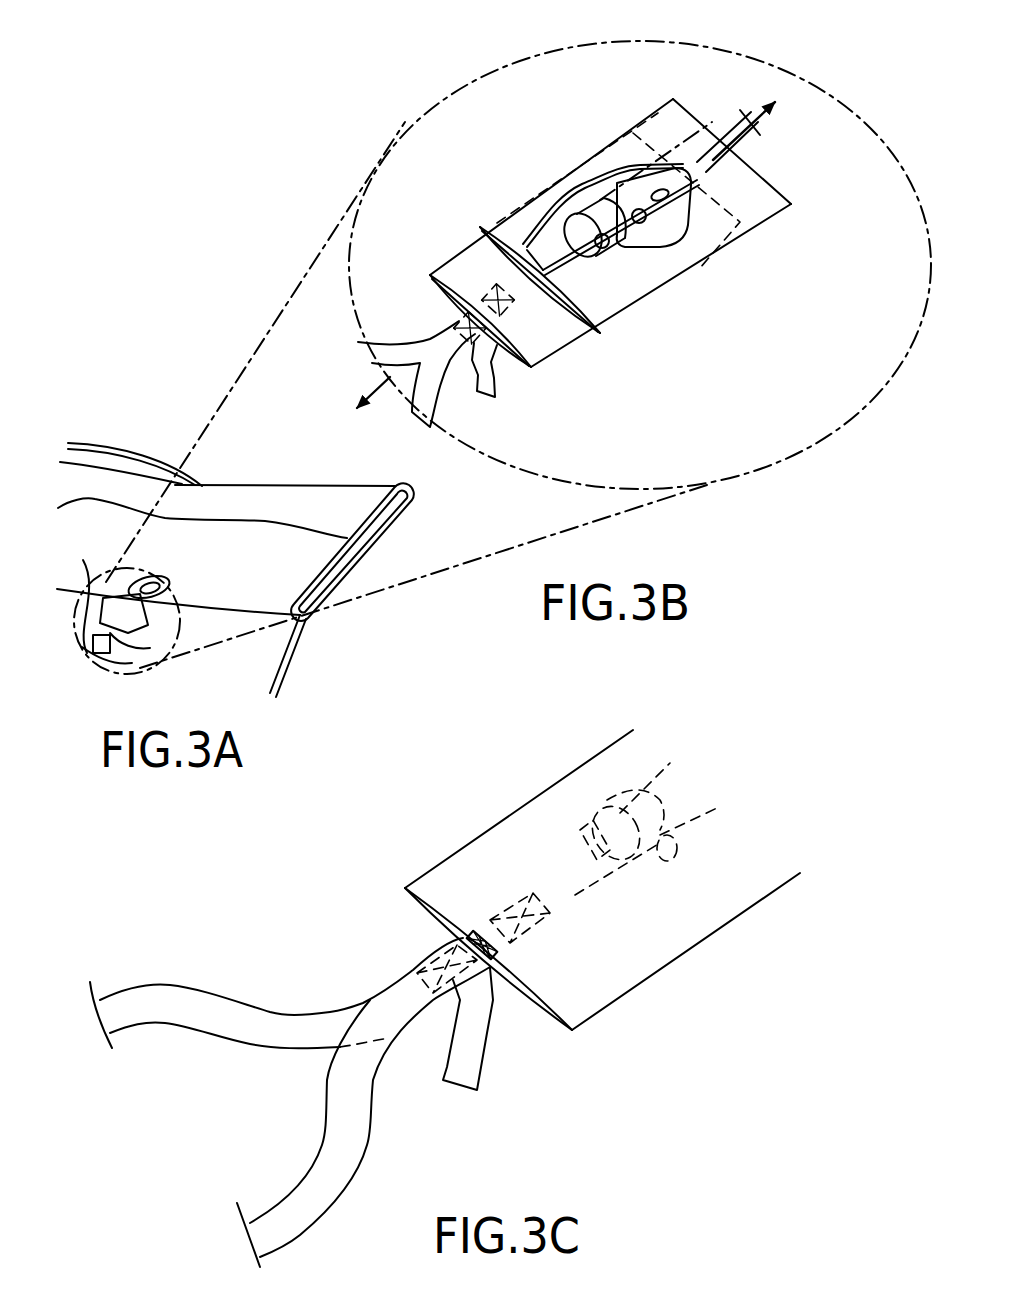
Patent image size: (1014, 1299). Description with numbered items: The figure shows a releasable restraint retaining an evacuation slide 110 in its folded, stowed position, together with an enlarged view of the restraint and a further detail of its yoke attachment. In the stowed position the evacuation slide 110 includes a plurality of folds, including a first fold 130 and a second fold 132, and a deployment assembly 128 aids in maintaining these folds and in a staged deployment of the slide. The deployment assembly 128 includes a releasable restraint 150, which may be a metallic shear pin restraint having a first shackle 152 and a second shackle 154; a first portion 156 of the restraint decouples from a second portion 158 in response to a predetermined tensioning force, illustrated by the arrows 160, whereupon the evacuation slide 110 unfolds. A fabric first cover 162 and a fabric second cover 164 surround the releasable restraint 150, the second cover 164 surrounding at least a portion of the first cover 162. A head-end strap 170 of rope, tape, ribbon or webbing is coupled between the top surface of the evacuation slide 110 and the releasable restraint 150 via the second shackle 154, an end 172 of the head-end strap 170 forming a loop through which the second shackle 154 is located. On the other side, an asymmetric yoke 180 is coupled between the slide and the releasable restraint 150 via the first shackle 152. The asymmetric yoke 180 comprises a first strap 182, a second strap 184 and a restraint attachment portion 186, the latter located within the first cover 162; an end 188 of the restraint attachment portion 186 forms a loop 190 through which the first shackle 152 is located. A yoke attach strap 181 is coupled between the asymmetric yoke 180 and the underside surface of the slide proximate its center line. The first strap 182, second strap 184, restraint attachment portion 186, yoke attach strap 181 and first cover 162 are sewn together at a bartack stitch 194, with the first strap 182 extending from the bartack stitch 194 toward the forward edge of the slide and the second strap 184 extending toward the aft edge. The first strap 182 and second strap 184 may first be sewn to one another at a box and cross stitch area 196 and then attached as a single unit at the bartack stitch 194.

In FIG. 3A, the evacuation slide 110 is at (115, 474).
In FIG. 3A, the deployment assembly 128 is at (170, 553).
In FIG. 3B, the deployment assembly 128 is at (477, 140).
In FIG. 3C, the deployment assembly 128 is at (767, 763).
In FIG. 3A, the first fold 130 is at (405, 490).
In FIG. 3A, the second fold 132 is at (308, 620).
In FIG. 3B, the releasable restraint 150 is at (627, 232).
In FIG. 3C, the releasable restraint 150 is at (718, 800).
In FIG. 3B, the first shackle 152 is at (630, 262).
In FIG. 3C, the first shackle 152 is at (587, 830).
In FIG. 3B, the second shackle 154 is at (690, 225).
In FIG. 3B, the first portion 156 is at (588, 220).
In FIG. 3C, the first portion 156 is at (638, 817).
In FIG. 3B, the second portion 158 is at (622, 195).
In FIG. 3B, the arrows 160 is at (757, 117).
In FIG. 3B, the first cover 162 is at (463, 253).
In FIG. 3C, the first cover 162 is at (615, 743).
In FIG. 3B, the second cover 164 is at (767, 208).
In FIG. 3A, the head-end strap 170 is at (158, 590).
In FIG. 3B, the head-end strap 170 is at (753, 140).
In FIG. 3B, the end 172 is at (662, 192).
In FIG. 3B, the asymmetric yoke 180 is at (427, 318).
In FIG. 3C, the asymmetric yoke 180 is at (347, 940).
In FIG. 3B, the yoke attach strap 181 is at (487, 368).
In FIG. 3C, the yoke attach strap 181 is at (463, 1067).
In FIG. 3A, the first strap 182 is at (93, 600).
In FIG. 3B, the first strap 182 is at (388, 354).
In FIG. 3C, the first strap 182 is at (253, 1022).
In FIG. 3A, the second strap 184 is at (127, 652).
In FIG. 3B, the second strap 184 is at (428, 387).
In FIG. 3C, the second strap 184 is at (357, 1132).
In FIG. 3B, the restraint attachment portion 186 is at (538, 292).
In FIG. 3C, the restraint attachment portion 186 is at (557, 893).
In FIG. 3B, the end 188 is at (534, 254).
In FIG. 3C, the end 188 is at (570, 863).
In FIG. 3C, the loop 190 is at (600, 888).
In FIG. 3C, the bartack stitch 194 is at (472, 935).
In FIG. 3C, the box and cross stitch area 196 is at (417, 957).